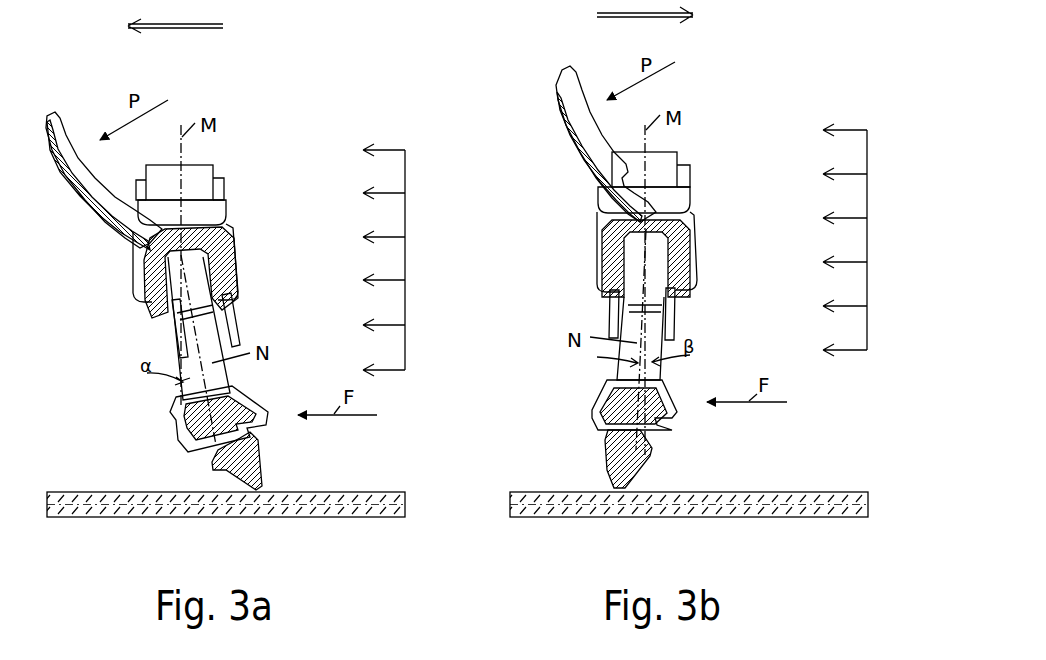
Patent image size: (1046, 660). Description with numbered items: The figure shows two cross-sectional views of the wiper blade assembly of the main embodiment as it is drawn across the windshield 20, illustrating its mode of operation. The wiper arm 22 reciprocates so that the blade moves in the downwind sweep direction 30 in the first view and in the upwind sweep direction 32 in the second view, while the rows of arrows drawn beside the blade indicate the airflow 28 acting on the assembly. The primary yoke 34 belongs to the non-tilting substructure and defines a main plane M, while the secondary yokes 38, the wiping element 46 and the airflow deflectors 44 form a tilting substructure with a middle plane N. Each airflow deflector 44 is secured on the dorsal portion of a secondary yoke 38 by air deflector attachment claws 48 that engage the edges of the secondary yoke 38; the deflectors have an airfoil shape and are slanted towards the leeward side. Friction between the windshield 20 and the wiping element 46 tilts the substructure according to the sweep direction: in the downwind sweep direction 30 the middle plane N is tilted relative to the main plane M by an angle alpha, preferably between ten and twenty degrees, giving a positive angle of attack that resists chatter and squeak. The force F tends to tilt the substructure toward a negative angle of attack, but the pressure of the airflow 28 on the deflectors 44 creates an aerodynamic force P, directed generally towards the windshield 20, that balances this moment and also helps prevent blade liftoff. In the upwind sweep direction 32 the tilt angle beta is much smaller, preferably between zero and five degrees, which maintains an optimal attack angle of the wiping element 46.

In FIG. 3A, the windshield 20 is at (87, 503).
In FIG. 3B, the windshield 20 is at (548, 502).
In FIG. 3A, the wiper arm 22 is at (200, 171).
In FIG. 3B, the wiper arm 22 is at (666, 157).
In FIG. 3A, the airflow (relative wind) acting on the blade 28 is at (407, 212).
In FIG. 3B, the airflow (relative wind) acting on the blade 28 is at (867, 192).
In FIG. 3A, the downwind sweep direction 30 is at (225, 28).
In FIG. 3B, the upwind sweep direction 32 is at (665, 15).
In FIG. 3A, the primary yoke 34 is at (200, 214).
In FIG. 3B, the primary yoke 34 is at (663, 202).
In FIG. 3A, the secondary yokes 38 is at (222, 268).
In FIG. 3B, the secondary yokes 38 is at (687, 262).
In FIG. 3A, the airflow deflectors 44 is at (88, 193).
In FIG. 3B, the airflow deflectors 44 is at (580, 148).
In FIG. 3A, the wiping element 46 is at (243, 457).
In FIG. 3B, the wiping element 46 is at (620, 458).
In FIG. 3A, the air deflector attachment claws 48 is at (212, 302).
In FIG. 3B, the air deflector attachment claws 48 is at (663, 293).